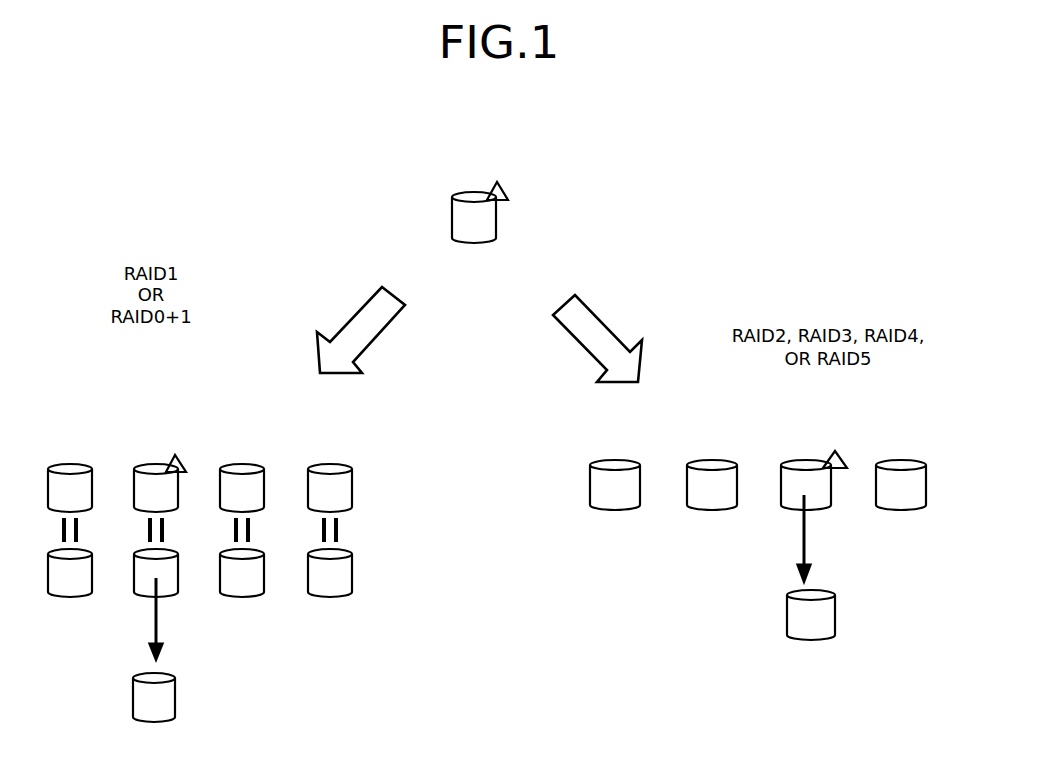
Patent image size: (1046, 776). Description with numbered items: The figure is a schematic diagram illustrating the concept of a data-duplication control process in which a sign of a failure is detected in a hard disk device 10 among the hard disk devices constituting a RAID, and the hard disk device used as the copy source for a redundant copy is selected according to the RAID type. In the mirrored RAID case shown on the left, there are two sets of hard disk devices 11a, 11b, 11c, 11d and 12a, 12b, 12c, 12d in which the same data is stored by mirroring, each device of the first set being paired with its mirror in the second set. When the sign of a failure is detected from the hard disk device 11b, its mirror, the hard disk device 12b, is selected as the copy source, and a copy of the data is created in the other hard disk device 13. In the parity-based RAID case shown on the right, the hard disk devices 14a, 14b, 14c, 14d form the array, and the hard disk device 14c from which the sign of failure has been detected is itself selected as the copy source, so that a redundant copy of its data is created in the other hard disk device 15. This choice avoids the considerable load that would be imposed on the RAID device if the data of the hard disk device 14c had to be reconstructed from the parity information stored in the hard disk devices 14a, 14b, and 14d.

The hard disk device 10 is at (482, 195).
The hard disk device 11a is at (86, 466).
The hard disk device 11b is at (169, 466).
The hard disk device 11c is at (257, 466).
The hard disk device 11d is at (346, 466).
The hard disk device 12a is at (76, 580).
The hard disk device 12b is at (164, 580).
The hard disk device 12c is at (250, 580).
The hard disk device 12d is at (338, 580).
The hard disk device 13 is at (163, 708).
The hard disk device 14a is at (633, 463).
The hard disk device 14b is at (730, 463).
The hard disk device 14c is at (824, 463).
The hard disk device 14d is at (919, 463).
The hard disk device 15 is at (820, 625).